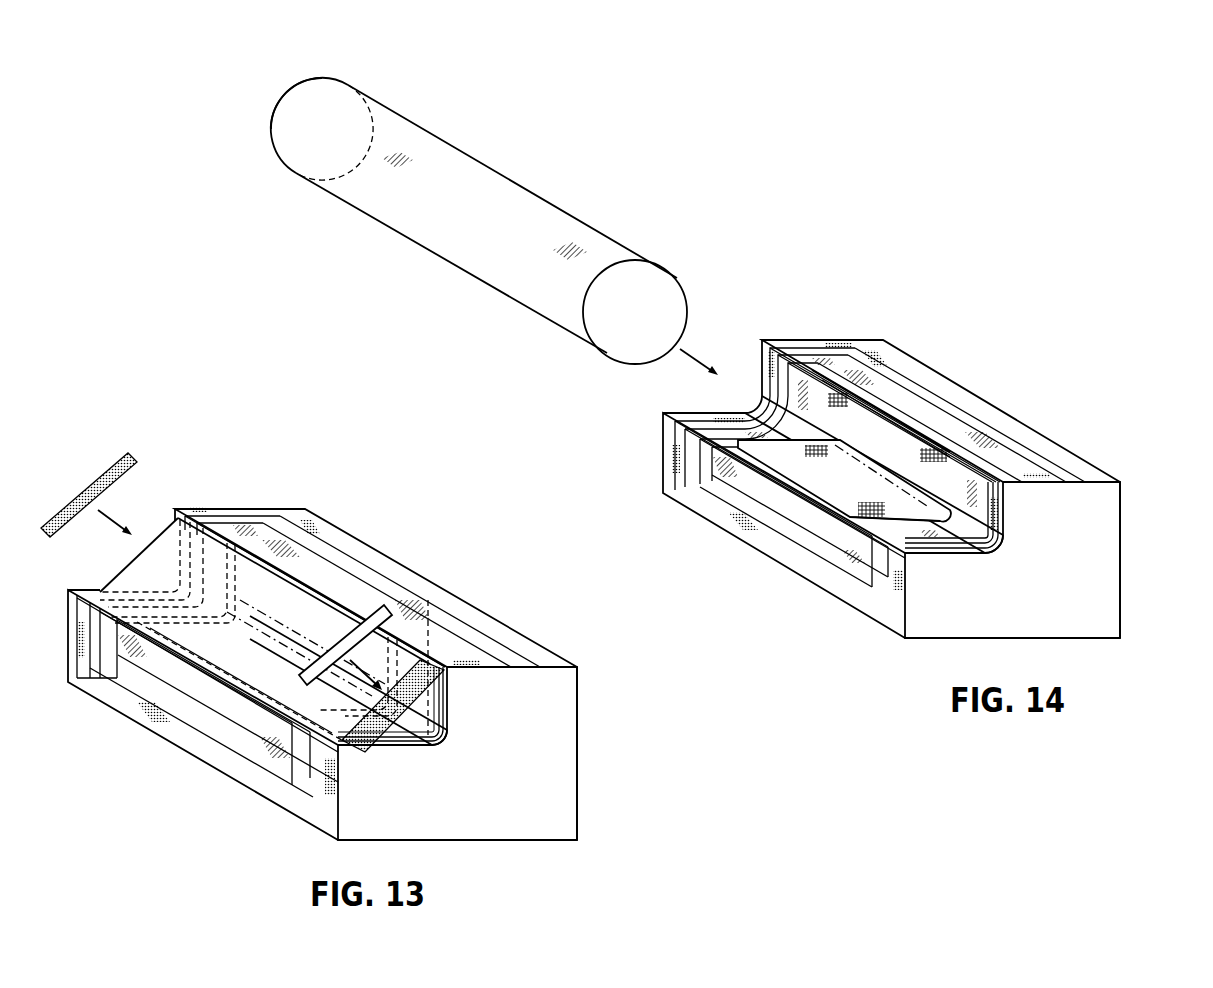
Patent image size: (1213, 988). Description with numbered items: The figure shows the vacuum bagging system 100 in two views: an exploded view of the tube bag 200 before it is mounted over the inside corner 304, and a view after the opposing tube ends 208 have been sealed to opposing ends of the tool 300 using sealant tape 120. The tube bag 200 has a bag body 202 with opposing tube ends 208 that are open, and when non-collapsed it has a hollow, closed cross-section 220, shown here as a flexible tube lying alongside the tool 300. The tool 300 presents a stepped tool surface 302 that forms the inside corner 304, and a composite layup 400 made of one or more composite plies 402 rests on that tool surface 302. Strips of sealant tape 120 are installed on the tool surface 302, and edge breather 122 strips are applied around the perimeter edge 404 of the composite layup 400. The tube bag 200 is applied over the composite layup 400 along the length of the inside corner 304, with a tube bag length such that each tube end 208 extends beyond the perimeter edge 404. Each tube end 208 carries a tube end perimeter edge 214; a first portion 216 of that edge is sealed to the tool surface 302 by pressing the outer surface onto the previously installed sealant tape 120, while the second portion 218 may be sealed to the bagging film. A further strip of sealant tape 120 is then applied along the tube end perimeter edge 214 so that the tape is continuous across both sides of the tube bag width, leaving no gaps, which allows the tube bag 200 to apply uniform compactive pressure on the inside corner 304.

In FIG. 13, the vacuum bagging system 100 is at (302, 458).
In FIG. 14, the vacuum bagging system 100 is at (930, 204).
In FIG. 13, the sealant tape 120 is at (108, 470).
In FIG. 14, the sealant tape 120 is at (1043, 453).
In FIG. 13, the edge breather 122 is at (440, 643).
In FIG. 14, the edge breather 122 is at (855, 365).
In FIG. 13, the tube bag 200 is at (500, 160).
In FIG. 13, the bag body 202 is at (630, 243).
In FIG. 13, the tube ends 208 is at (332, 80).
In FIG. 13, the tube end perimeter edge 214 is at (276, 157).
In FIG. 13, the first portion of the tube end perimeter edge 216 is at (442, 718).
In FIG. 13, the second portion of the tube end perimeter edge 218 is at (133, 553).
In FIG. 13, the hollow, closed cross-section 220 is at (687, 323).
In FIG. 13, the tool 300 is at (320, 510).
In FIG. 14, the tool 300 is at (893, 338).
In FIG. 13, the tool surface 302 is at (557, 660).
In FIG. 14, the tool surface 302 is at (1100, 477).
In FIG. 13, the inside corner 304 is at (440, 747).
In FIG. 14, the inside corner 304 is at (1000, 543).
In FIG. 13, the composite layup 400 is at (257, 662).
In FIG. 14, the composite layup 400 is at (920, 442).
In FIG. 13, the composite plies 402 is at (308, 605).
In FIG. 14, the composite plies 402 is at (855, 417).
In FIG. 14, the perimeter edge 404 is at (868, 517).